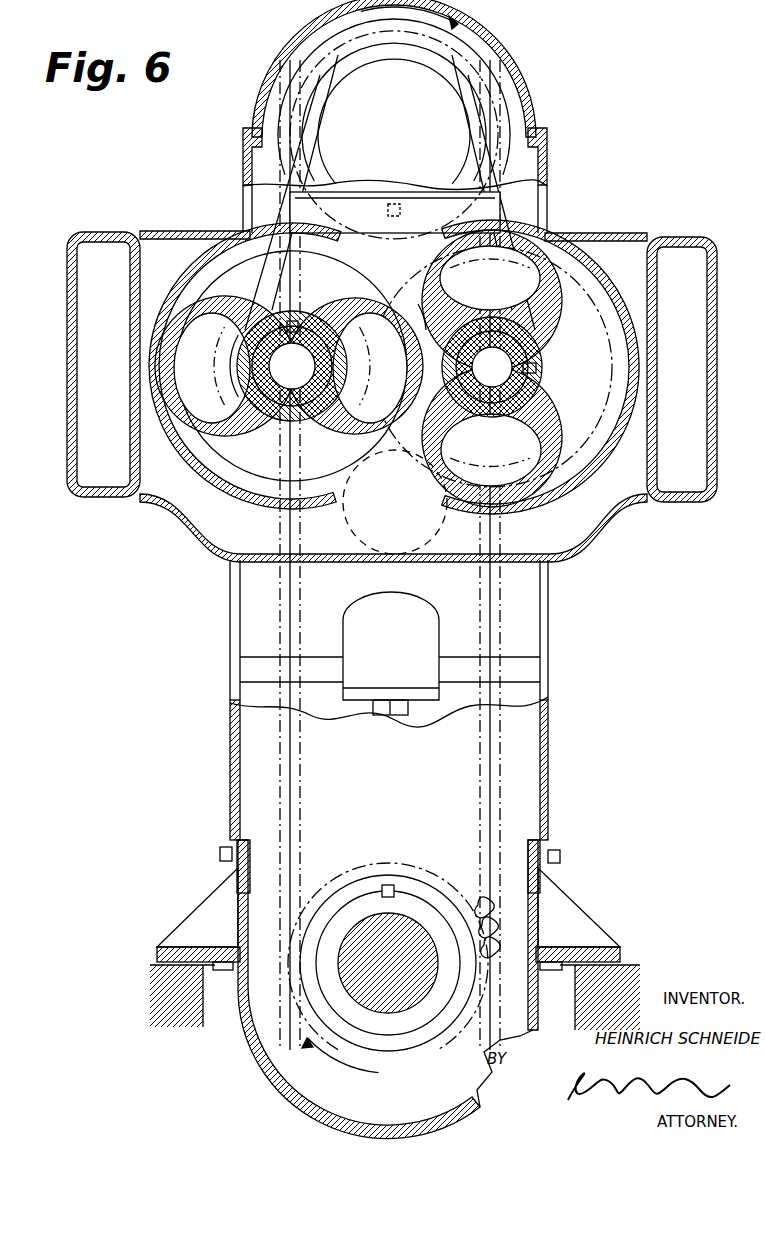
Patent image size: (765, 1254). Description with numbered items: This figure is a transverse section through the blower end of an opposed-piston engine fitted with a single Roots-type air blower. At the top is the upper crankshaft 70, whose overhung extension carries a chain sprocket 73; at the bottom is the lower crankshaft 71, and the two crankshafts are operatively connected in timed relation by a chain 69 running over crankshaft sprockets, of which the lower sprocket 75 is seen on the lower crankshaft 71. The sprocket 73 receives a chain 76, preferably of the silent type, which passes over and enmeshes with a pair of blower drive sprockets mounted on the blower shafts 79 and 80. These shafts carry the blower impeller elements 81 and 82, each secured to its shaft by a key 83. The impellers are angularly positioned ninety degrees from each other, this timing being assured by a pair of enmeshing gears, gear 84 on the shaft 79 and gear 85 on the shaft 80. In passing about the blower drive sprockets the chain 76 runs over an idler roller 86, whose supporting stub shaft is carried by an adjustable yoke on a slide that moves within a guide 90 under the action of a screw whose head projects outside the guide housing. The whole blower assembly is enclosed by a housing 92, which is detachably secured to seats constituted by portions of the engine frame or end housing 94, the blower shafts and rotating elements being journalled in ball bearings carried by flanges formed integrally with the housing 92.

The engine frame or end housing 94 is at (498, 36).
The chain sprocket 73 is at (470, 103).
The upper crankshaft 70 is at (418, 127).
The blower housing 92 is at (578, 237).
The blower impeller element 82 is at (575, 486).
The chain 76 is at (268, 250).
The idler roller 86 is at (368, 522).
The blower impeller element 81 is at (155, 345).
The gear 84 is at (355, 292).
The blower shaft 79 is at (336, 382).
The blower shaft 80 is at (492, 368).
The gear 85 is at (418, 304).
The key 83 is at (298, 321).
The chain 69 is at (298, 791).
The guide 90 is at (378, 655).
The sprocket 75 is at (418, 890).
The lower crankshaft 71 is at (362, 976).